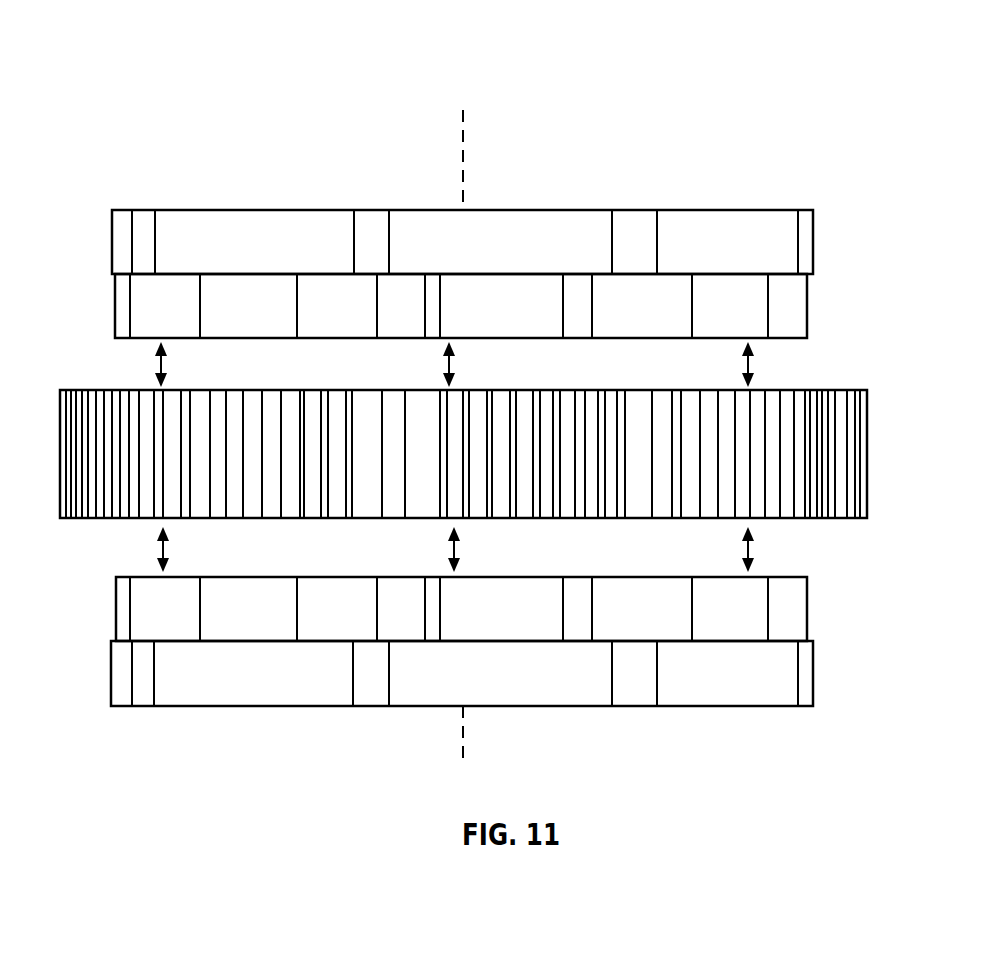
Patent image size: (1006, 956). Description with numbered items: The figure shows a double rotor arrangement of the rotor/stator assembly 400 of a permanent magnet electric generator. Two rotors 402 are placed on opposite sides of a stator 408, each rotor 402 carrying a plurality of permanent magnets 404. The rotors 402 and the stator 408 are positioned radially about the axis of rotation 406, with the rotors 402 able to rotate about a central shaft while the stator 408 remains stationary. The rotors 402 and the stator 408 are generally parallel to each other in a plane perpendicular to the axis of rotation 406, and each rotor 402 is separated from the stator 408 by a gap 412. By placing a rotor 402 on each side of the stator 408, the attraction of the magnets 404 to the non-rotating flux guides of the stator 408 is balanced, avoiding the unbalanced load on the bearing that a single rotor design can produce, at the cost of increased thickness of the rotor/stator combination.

The rotor/stator assembly 400 is at (131, 52).
The rotor 402 is at (813, 244).
The permanent magnets 404 is at (622, 290).
The axis of rotation 406 is at (465, 138).
The stator 408 is at (868, 452).
The gap 412 is at (797, 359).